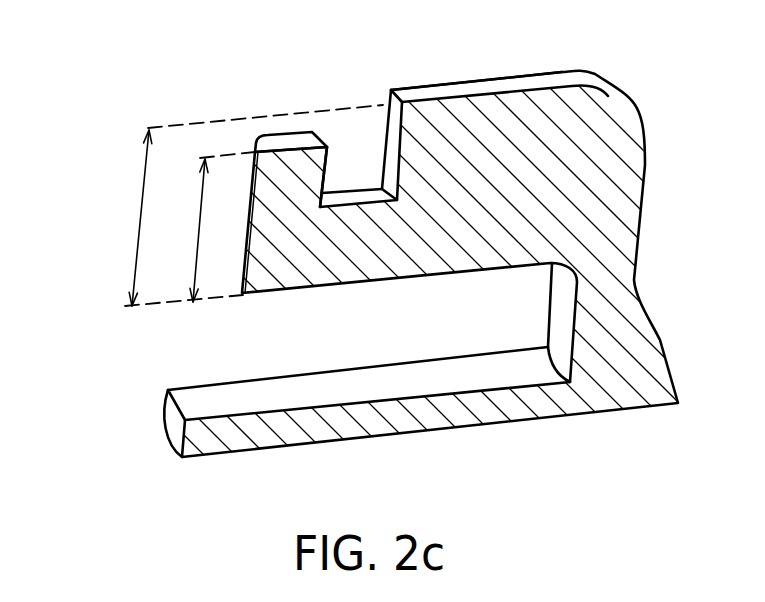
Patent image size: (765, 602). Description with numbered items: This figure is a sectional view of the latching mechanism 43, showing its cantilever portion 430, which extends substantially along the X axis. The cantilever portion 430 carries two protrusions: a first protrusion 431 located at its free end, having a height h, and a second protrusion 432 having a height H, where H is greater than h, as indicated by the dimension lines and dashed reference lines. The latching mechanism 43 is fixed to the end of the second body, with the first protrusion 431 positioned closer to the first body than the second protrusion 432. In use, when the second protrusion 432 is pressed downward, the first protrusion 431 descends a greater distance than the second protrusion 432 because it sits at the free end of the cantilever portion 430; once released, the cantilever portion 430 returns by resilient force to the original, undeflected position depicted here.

The latching mechanism 43 is at (80, 48).
The cantilever portion 430 is at (453, 222).
The first protrusion 431 is at (283, 143).
The second protrusion 432 is at (428, 93).